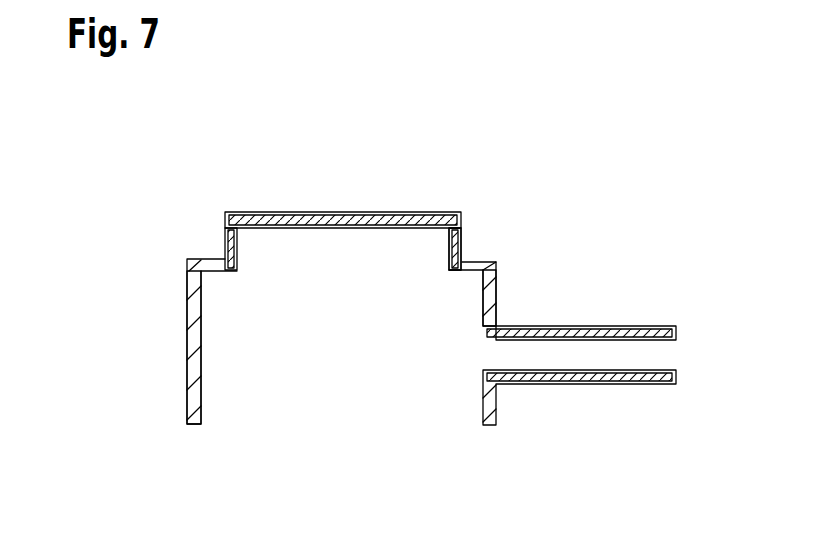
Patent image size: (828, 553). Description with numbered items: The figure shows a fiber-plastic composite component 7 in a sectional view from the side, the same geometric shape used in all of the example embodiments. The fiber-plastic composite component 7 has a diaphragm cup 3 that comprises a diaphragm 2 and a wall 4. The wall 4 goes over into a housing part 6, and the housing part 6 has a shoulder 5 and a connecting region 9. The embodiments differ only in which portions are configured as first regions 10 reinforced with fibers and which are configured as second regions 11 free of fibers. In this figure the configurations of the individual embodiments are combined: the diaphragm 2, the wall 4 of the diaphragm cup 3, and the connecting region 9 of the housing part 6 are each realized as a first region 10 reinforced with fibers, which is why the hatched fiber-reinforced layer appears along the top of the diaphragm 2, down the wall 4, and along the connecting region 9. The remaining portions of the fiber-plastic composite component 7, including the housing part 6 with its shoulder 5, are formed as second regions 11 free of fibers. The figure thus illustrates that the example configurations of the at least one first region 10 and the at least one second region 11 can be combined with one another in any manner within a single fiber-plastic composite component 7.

The diaphragm 2 is at (398, 212).
The diaphragm cup 3 is at (482, 202).
The wall 4 is at (462, 249).
The shoulder 5 is at (207, 258).
The housing part 6 is at (497, 283).
The fiber-plastic composite component 7 is at (572, 238).
The connecting region 9 is at (615, 326).
The first region 10 is at (300, 212).
The second region 11 is at (195, 350).